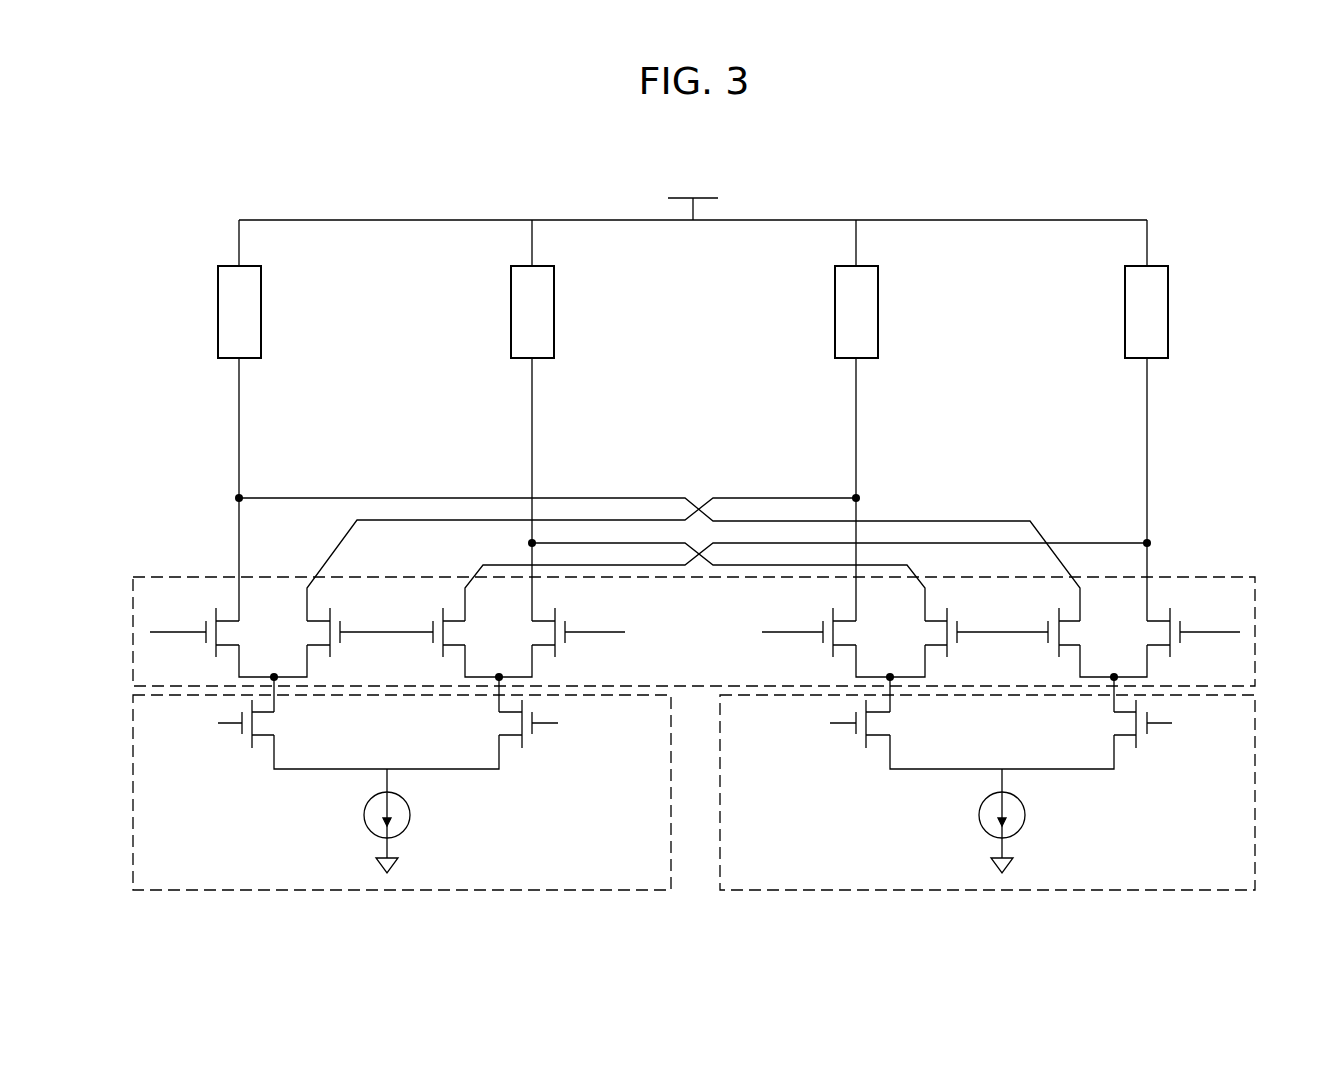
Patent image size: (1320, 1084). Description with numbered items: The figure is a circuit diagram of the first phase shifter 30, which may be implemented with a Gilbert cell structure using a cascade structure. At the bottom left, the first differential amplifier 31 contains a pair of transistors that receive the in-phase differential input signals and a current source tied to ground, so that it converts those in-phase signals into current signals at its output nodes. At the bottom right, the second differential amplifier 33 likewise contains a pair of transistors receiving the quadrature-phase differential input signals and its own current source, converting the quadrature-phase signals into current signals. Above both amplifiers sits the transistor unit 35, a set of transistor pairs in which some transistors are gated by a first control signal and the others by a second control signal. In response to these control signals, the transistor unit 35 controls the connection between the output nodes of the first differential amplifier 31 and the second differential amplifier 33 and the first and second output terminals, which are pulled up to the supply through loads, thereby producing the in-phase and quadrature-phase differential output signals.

The first phase shifter 30 is at (1199, 171).
The first differential amplifier 31 is at (132, 791).
The second differential amplifier 33 is at (1257, 791).
The transistor unit 35 is at (1257, 632).